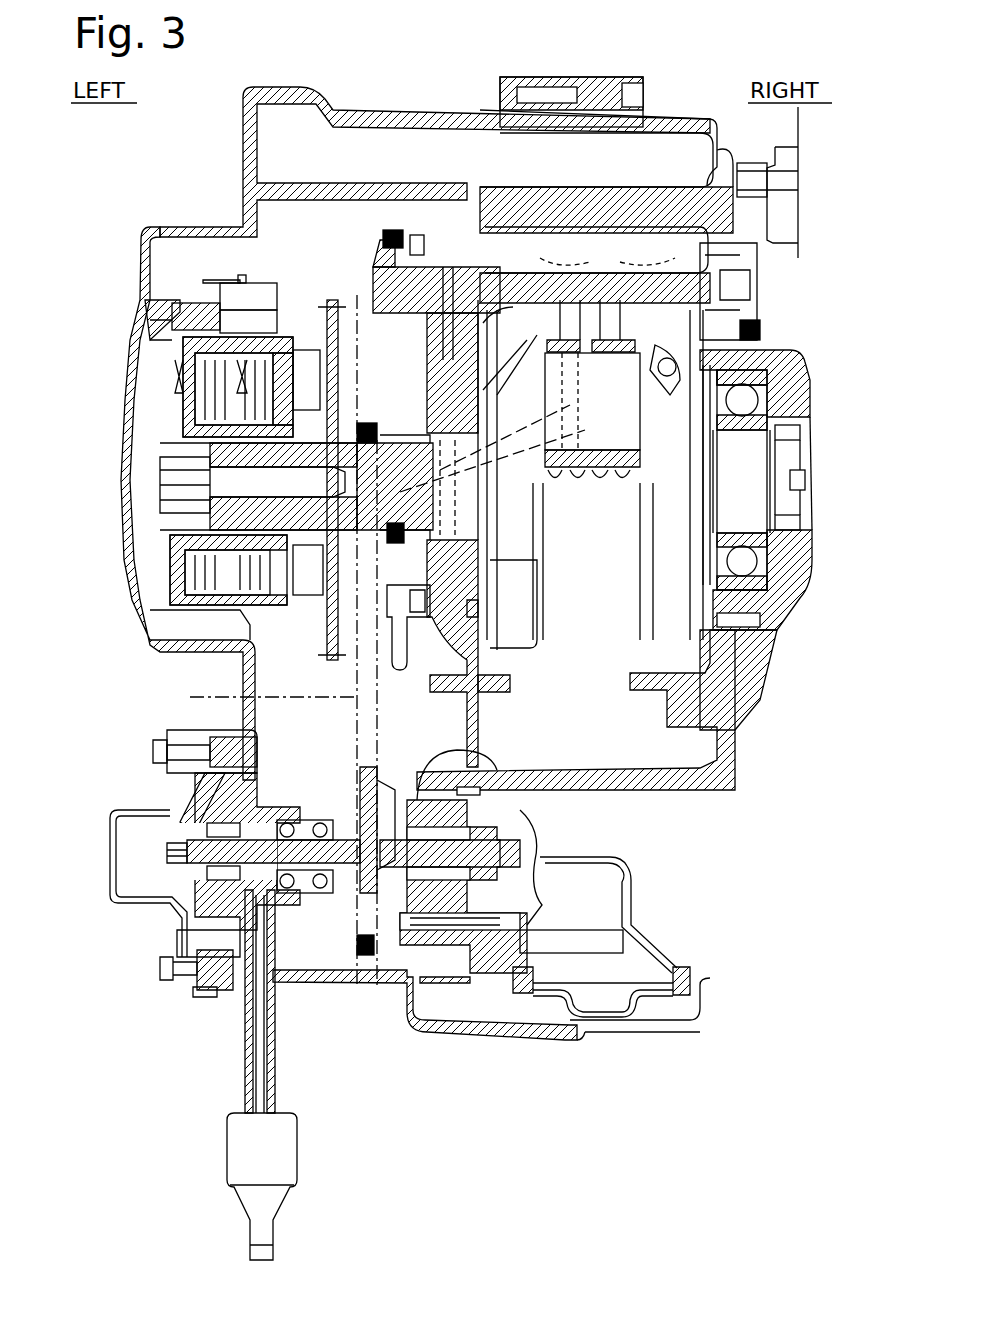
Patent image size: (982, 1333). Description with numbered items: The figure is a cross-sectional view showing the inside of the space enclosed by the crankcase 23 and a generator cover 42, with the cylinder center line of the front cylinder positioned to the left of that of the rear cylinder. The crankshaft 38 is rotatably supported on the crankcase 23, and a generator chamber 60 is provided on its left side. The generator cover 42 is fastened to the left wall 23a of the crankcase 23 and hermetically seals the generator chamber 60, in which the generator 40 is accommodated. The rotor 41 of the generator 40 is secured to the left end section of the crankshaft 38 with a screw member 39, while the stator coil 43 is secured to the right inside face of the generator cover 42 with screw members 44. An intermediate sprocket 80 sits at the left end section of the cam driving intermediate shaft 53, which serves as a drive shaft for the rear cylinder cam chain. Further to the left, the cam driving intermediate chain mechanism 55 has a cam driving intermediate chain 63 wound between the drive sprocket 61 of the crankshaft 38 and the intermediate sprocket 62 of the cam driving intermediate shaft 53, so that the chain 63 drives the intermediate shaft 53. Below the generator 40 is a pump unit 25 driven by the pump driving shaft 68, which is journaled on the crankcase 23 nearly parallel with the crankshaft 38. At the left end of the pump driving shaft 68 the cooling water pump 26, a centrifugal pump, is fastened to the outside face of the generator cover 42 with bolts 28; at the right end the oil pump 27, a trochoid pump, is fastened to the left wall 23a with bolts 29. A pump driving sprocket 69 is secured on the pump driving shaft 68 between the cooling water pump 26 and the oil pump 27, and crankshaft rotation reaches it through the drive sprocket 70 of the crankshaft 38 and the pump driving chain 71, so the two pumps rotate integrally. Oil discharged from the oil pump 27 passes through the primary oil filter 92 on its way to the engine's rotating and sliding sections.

The crankcase 23 is at (513, 1027).
The left wall of the crankcase 23a is at (207, 258).
The pump unit 25 is at (303, 911).
The cooling water pump 26 is at (150, 818).
The oil pump 27 is at (537, 787).
The bolts 28 is at (152, 752).
The bolts 29 is at (398, 978).
The crankshaft 38 is at (412, 500).
The screw member 39 is at (175, 497).
The generator 40 is at (156, 415).
The rotor 41 is at (232, 632).
The generator cover 42 is at (148, 330).
The stator coil 43 is at (178, 590).
The screw members 44 is at (180, 545).
The cam driving intermediate shaft 53 is at (497, 260).
The cam driving intermediate chain mechanism 55 is at (422, 228).
The generator chamber 60 is at (185, 232).
The drive sprocket 61 is at (510, 480).
The intermediate sprocket 62 is at (363, 345).
The cam driving intermediate chain 63 is at (394, 230).
The pump driving shaft 68 is at (330, 897).
The pump driving sprocket 69 is at (370, 963).
The drive sprocket 70 is at (312, 630).
The pump driving chain 71 is at (268, 640).
The intermediate sprocket 80 is at (445, 215).
The primary oil filter 92 is at (640, 977).